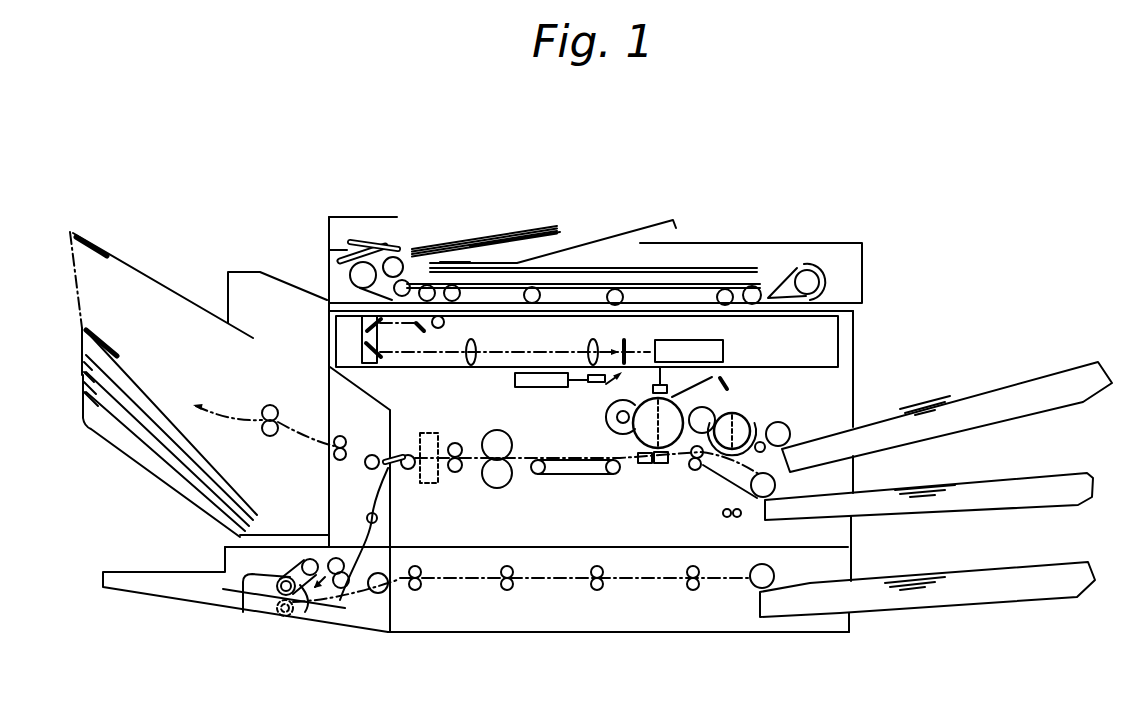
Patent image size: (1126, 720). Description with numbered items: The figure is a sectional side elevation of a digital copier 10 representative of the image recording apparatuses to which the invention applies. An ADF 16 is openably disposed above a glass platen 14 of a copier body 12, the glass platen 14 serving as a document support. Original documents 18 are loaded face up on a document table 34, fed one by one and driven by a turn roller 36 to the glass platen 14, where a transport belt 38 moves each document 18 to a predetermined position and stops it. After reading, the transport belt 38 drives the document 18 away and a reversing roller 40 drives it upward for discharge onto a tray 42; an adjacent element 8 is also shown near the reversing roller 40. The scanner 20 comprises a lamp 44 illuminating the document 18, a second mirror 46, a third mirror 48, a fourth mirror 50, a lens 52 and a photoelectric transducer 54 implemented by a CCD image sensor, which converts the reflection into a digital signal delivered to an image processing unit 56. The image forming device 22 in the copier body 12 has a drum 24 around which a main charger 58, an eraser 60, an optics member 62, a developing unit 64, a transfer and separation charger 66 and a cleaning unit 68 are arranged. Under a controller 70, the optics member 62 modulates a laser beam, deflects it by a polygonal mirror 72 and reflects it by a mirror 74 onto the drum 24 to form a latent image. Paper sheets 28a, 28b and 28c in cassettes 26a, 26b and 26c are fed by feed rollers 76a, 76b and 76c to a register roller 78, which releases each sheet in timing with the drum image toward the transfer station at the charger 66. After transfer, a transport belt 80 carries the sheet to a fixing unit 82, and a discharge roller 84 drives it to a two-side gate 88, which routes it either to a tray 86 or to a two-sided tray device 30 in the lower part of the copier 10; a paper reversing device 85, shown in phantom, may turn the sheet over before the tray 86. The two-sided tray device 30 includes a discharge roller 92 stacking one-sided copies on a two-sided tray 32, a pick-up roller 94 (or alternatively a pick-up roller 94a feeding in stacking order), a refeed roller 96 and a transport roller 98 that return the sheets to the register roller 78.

The belt roller 8 is at (797, 267).
The digital copier 10 is at (885, 190).
The copier body 12 is at (807, 633).
The glass platen 14 is at (862, 294).
The ADF 16 is at (474, 178).
The original document 18 is at (510, 244).
The scanner 20 is at (562, 340).
The image forming device 22 is at (678, 455).
The drum 24 is at (625, 472).
The cassette 26a is at (1040, 372).
The cassette 26b is at (1050, 473).
The cassette 26c is at (1040, 570).
The paper sheets 28a is at (925, 405).
The paper sheets 28b is at (932, 487).
The paper sheets 28c is at (915, 580).
The two-sided tray device 30 is at (399, 614).
The two-sided tray 32 is at (243, 603).
The document table 34 is at (549, 237).
The turn roller 36 is at (352, 257).
The transport belt 38 is at (470, 283).
The reversing roller 40 is at (806, 269).
The tray 42 is at (624, 338).
The lamp 44 is at (437, 318).
The second mirror 46 is at (418, 324).
The third mirror 48 is at (360, 325).
The fourth mirror 50 is at (364, 351).
The lens 52 is at (593, 338).
The photoelectric transducer 54 is at (652, 345).
The image processing unit 56 is at (683, 343).
The main charger 58 is at (660, 366).
The eraser 60 is at (704, 405).
The optics member 62 is at (606, 386).
The developing unit 64 is at (750, 412).
The transfer and separation charger 66 is at (648, 465).
The cleaning unit 68 is at (618, 431).
The controller 70 is at (530, 373).
The polygonal mirror 72 is at (572, 386).
The mirror 74 is at (728, 383).
The feed roller 76a is at (846, 414).
The feed roller 76b is at (777, 481).
The feed roller 76c is at (758, 588).
The register roller 78 is at (697, 470).
The transport belt 80 is at (560, 476).
The fixing unit 82 is at (497, 480).
The discharge roller 84 is at (455, 472).
The paper reversing device 85 is at (437, 436).
The tray 86 is at (140, 390).
The two-side gate 88 is at (395, 455).
The discharge roller 92 is at (342, 612).
The pick-up roller 94 is at (292, 598).
The pick-up roller 94a is at (272, 625).
The refeed roller 96 is at (380, 597).
The transport roller 98 is at (507, 598).